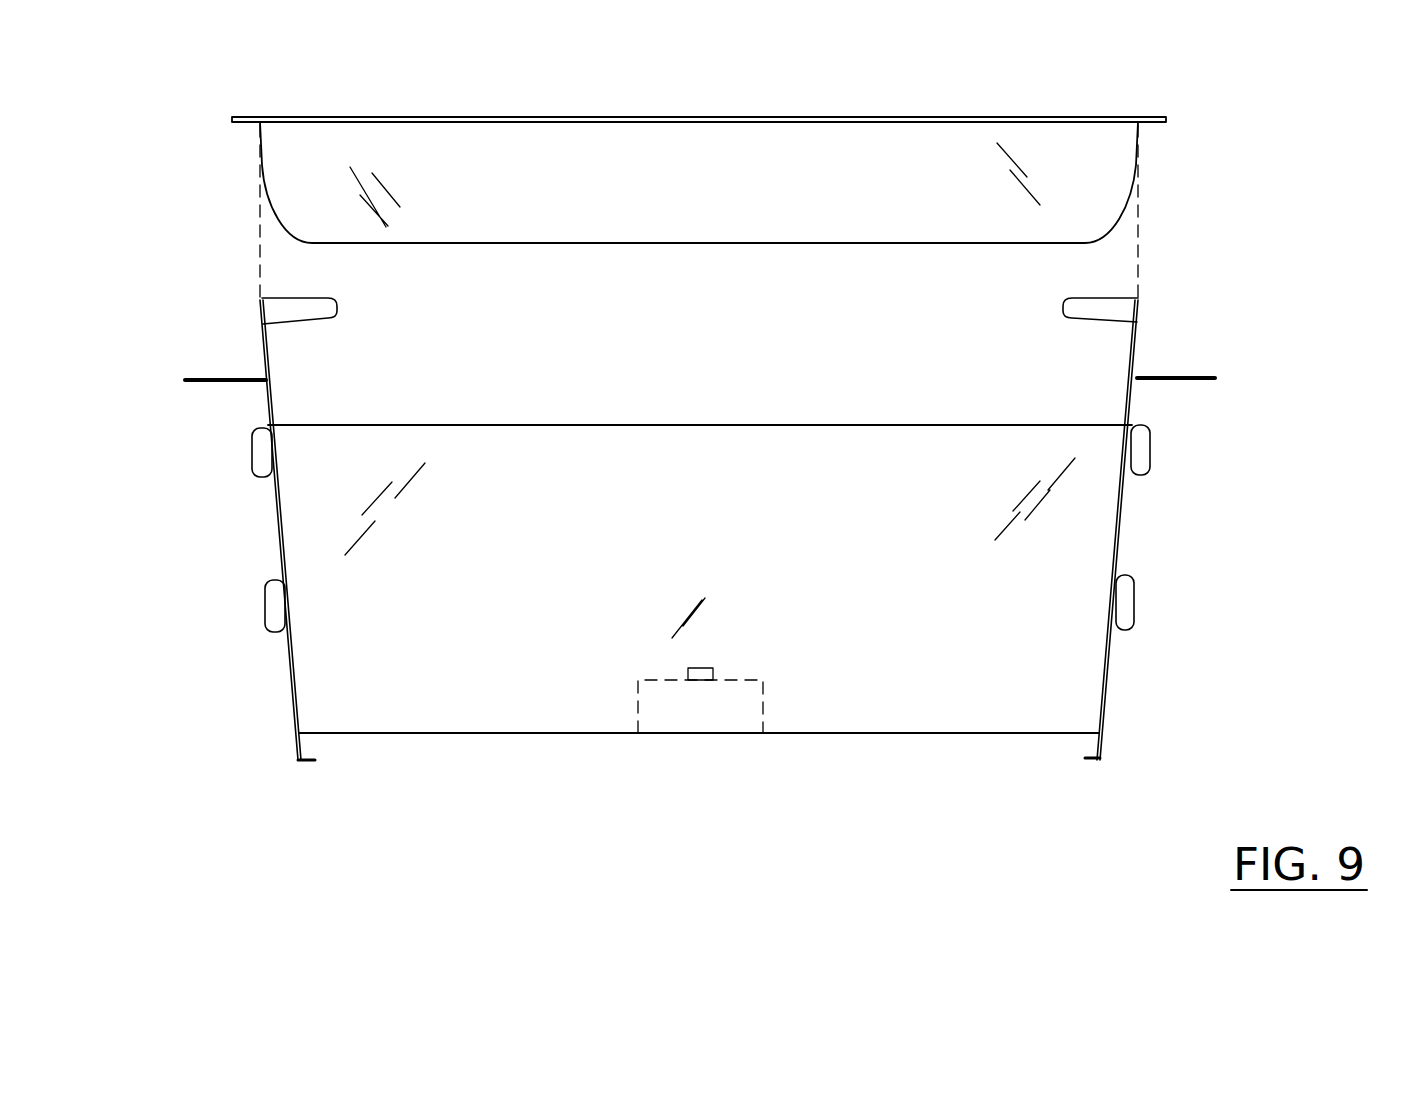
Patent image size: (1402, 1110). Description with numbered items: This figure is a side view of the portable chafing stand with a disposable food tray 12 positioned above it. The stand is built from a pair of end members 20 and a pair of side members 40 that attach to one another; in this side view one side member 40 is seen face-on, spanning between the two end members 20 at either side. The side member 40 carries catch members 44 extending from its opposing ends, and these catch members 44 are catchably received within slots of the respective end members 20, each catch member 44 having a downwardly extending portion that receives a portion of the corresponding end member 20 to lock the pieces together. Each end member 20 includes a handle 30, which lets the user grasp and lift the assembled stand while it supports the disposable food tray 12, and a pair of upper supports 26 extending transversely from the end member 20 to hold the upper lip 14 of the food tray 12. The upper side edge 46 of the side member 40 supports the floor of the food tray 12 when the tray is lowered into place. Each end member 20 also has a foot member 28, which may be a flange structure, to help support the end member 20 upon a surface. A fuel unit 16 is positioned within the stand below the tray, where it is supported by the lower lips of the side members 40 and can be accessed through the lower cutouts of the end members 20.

The disposable food tray 12 is at (652, 117).
The upper lip 14 is at (1152, 116).
The fuel unit 16 is at (718, 718).
The end member 20 is at (268, 407).
The upper support 26 is at (268, 300).
The foot member 28 is at (322, 758).
The handle 30 is at (210, 379).
The side member 40 is at (579, 735).
The catch member 44 is at (258, 450).
The upper side edge 46 is at (612, 425).